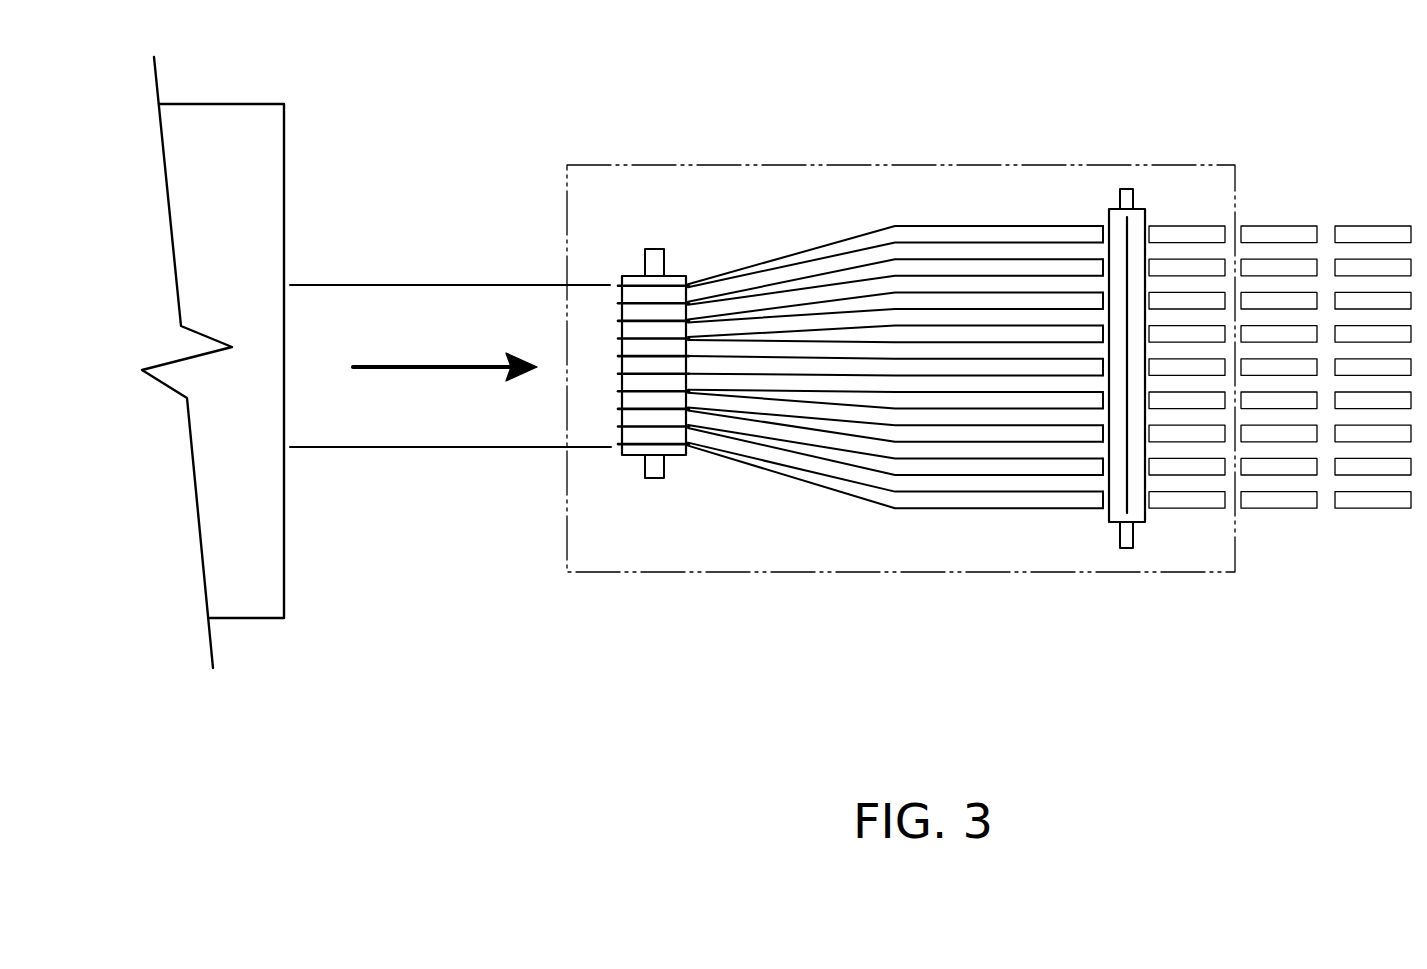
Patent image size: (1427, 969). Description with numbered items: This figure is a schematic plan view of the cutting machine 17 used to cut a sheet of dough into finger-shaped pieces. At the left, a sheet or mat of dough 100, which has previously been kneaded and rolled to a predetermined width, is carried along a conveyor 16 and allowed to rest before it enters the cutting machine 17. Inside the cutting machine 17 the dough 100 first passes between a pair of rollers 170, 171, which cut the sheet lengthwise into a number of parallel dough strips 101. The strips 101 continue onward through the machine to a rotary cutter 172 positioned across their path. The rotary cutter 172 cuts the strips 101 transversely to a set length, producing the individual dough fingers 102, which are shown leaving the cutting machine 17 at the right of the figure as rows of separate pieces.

The conveyor 16 is at (240, 185).
The cutting machine 17 is at (619, 213).
The dough 100 is at (432, 272).
The strips 101 is at (990, 205).
The fingers 102 is at (1371, 208).
The roller 170 is at (517, 401).
The roller 171 is at (618, 468).
The rotary cutter 172 is at (1098, 538).